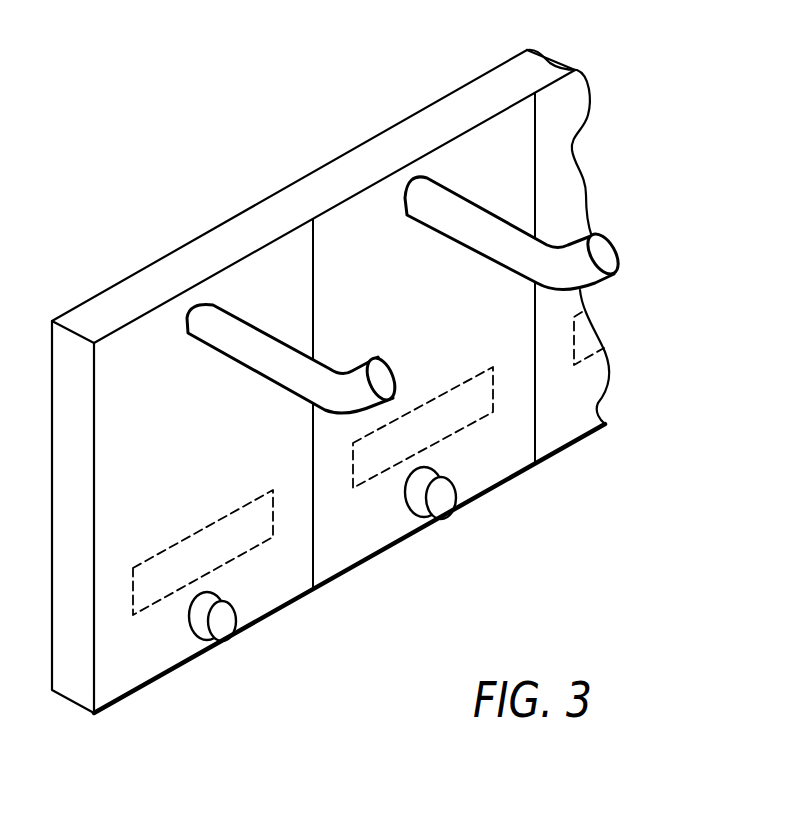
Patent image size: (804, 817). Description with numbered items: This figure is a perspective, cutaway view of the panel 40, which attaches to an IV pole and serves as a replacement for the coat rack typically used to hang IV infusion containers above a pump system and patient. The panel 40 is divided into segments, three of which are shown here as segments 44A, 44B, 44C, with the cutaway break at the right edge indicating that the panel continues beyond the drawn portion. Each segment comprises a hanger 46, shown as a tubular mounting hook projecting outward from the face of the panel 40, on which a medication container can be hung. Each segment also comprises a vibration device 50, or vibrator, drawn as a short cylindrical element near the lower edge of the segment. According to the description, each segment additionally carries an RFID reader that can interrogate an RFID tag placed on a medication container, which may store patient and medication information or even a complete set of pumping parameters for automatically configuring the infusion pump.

The panel 40 is at (588, 46).
The segment 44A is at (272, 613).
The segment 44B is at (493, 490).
The segment 44C is at (578, 403).
The hanger 46 is at (245, 333).
The vibration device 50 is at (226, 622).